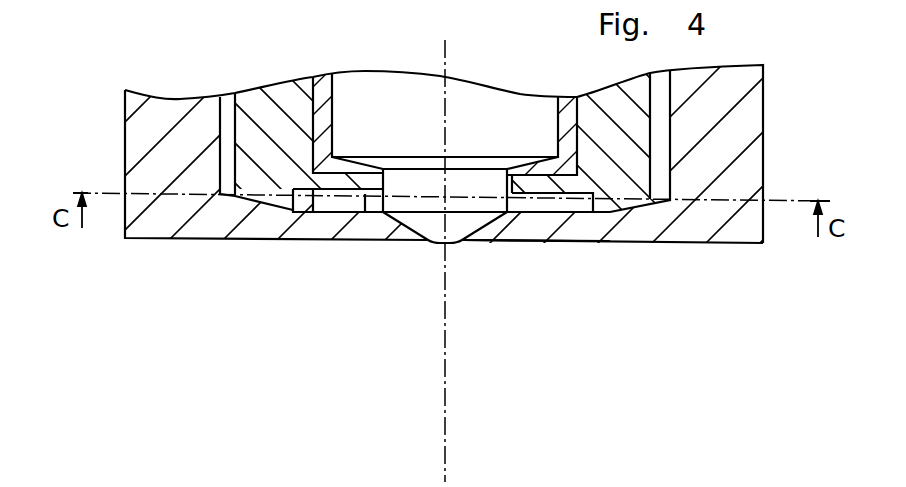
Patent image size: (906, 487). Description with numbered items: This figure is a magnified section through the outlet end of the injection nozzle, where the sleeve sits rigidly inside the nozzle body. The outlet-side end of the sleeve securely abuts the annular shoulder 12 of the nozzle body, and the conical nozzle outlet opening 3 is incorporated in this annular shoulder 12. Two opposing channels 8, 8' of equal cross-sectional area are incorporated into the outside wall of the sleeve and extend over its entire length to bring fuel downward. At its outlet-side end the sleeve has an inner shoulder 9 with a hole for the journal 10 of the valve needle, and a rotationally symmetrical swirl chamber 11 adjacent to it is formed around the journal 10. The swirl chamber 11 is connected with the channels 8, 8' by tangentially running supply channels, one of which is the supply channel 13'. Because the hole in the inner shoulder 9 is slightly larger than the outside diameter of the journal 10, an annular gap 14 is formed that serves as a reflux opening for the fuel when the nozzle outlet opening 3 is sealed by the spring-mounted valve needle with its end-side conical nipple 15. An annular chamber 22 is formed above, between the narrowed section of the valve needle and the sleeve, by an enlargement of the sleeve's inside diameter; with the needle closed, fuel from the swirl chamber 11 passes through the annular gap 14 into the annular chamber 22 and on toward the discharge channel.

The nozzle outlet opening 3 is at (477, 230).
The channel 8 is at (735, 141).
The channel 8' is at (166, 151).
The inner shoulder 9 is at (332, 182).
The journal 10 is at (458, 183).
The swirl chamber 11 is at (587, 202).
The annular shoulder 12 is at (517, 228).
The supply channel 13' is at (357, 304).
The annular gap 14 is at (553, 231).
The conical nipple 15 is at (400, 232).
The annular chamber 22 is at (322, 112).